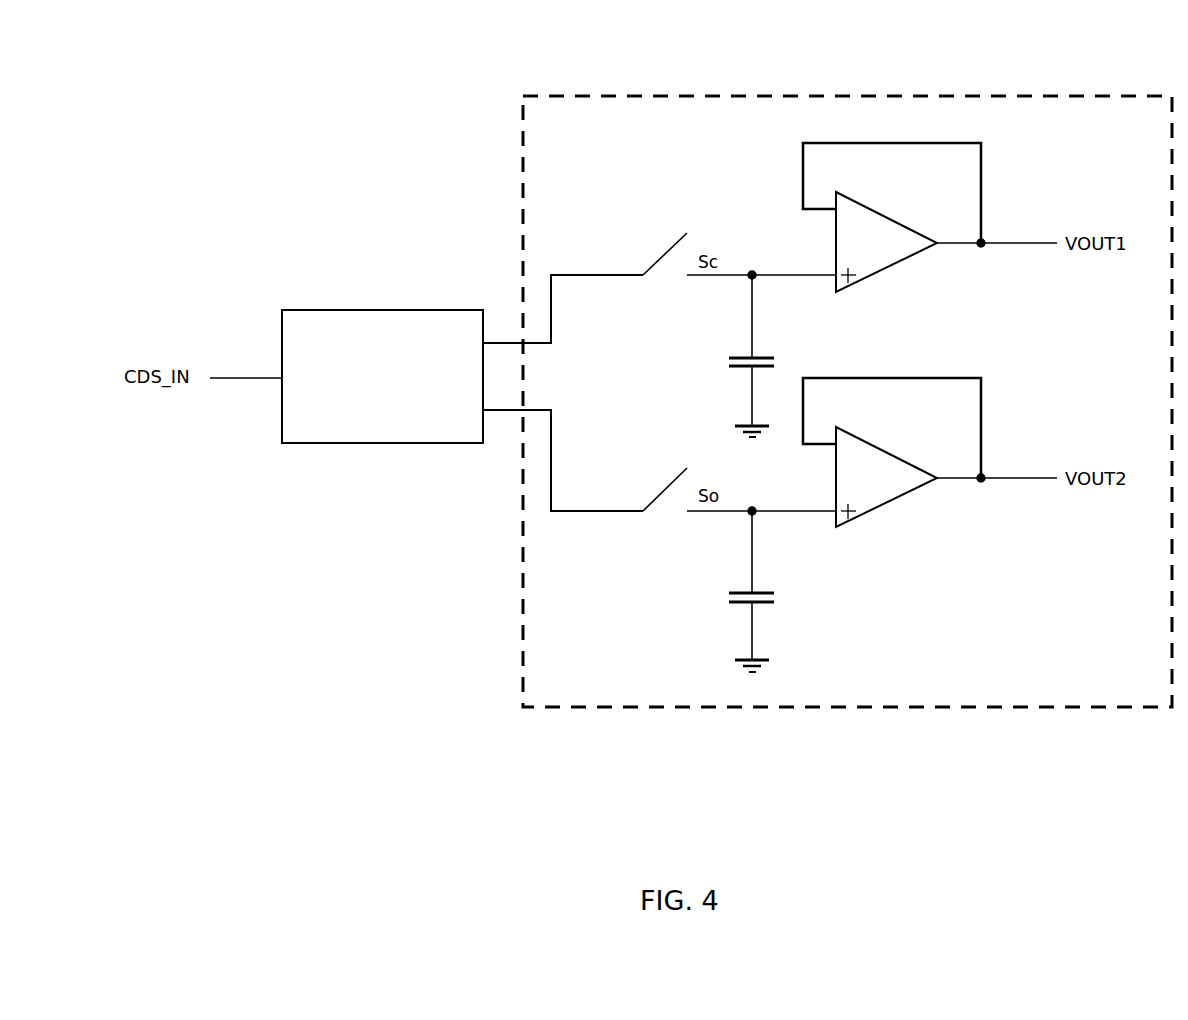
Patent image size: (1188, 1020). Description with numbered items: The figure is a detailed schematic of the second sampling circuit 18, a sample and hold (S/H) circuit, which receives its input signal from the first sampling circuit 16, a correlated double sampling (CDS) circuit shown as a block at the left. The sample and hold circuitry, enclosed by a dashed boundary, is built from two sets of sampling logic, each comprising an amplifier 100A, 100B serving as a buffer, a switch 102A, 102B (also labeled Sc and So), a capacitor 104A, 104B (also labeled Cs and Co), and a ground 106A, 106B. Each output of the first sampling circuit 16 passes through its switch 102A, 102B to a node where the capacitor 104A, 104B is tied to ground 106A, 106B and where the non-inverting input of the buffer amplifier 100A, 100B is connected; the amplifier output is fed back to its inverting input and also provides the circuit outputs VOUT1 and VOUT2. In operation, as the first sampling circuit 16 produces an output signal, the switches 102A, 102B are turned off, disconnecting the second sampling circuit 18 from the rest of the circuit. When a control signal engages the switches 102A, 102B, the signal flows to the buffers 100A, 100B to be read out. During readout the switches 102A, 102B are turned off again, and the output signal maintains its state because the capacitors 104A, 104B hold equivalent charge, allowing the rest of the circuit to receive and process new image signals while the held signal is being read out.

The first sampling circuit 16 is at (386, 310).
The second sampling circuit 18 is at (611, 96).
The amplifier 100A is at (873, 209).
The amplifier 100B is at (870, 444).
The switch 102A is at (675, 255).
The switch 102B is at (678, 491).
The capacitor 104A is at (747, 357).
The capacitor 104B is at (749, 593).
The ground 106A is at (749, 426).
The ground 106B is at (749, 660).